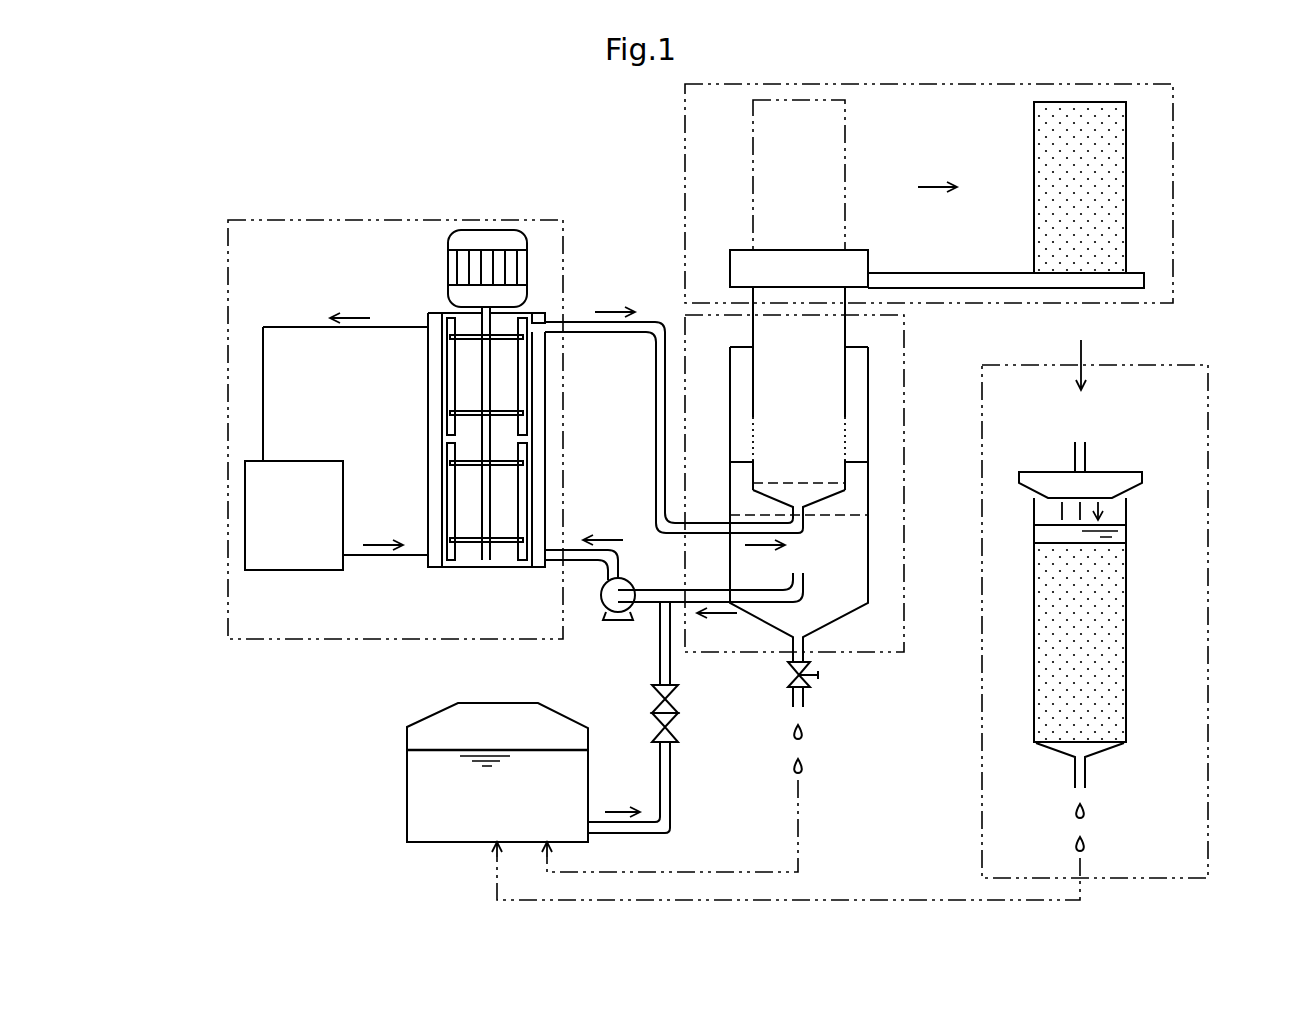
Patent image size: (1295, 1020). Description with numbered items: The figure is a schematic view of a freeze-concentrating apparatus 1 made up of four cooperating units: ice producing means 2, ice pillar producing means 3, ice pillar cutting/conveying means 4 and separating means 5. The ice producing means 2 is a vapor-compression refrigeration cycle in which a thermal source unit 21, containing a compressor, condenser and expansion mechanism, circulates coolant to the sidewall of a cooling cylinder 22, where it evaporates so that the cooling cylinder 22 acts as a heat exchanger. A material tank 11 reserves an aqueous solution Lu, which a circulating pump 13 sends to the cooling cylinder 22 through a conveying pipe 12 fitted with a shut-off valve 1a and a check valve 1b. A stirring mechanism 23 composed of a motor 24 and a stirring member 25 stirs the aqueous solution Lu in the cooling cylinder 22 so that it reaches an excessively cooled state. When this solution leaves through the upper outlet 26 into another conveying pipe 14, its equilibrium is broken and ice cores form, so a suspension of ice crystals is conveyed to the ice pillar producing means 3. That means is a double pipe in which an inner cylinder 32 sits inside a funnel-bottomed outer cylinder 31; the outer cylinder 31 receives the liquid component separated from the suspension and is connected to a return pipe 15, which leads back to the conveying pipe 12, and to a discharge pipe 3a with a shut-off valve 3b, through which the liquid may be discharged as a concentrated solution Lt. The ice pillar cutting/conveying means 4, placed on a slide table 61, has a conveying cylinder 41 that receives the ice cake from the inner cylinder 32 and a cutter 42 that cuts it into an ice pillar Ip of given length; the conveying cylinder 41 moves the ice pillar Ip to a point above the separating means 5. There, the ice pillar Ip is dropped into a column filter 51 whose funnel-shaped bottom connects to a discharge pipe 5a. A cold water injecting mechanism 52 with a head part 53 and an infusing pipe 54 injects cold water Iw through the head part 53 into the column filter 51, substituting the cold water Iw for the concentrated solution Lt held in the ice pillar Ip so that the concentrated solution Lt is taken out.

The freeze-concentrating apparatus 1 is at (228, 88).
The ice producing means 2 is at (228, 248).
The ice pillar producing means 3 is at (904, 652).
The ice pillar cutting/conveying means 4 is at (953, 82).
The separating means 5 is at (1208, 410).
The material tank 11 is at (407, 805).
The conveying pipe 12 is at (667, 808).
The circulating pump 13 is at (603, 608).
The conveying pipe 14 is at (656, 430).
The return pipe 15 is at (740, 604).
The shut-off valve 1a is at (652, 740).
The check valve 1b is at (652, 700).
The discharge pipe 3a is at (793, 704).
The shut-off valve 3b is at (812, 680).
The discharge pipe 5a is at (1073, 772).
The thermal source unit 21 is at (245, 555).
The cooling cylinder 22 is at (545, 418).
The stirring mechanism 23 is at (437, 247).
The motor 24 is at (492, 228).
The stirring member 25 is at (458, 376).
The upper outlet 26 is at (546, 318).
The outer cylinder 31 is at (868, 487).
The inner cylinder 32 is at (845, 370).
The conveying cylinder 41 is at (845, 175).
The cutter 42 is at (858, 250).
The column filter 51 is at (1126, 688).
The cold water injecting mechanism 52 is at (1120, 458).
The head part 53 is at (1125, 480).
The infusing pipe 54 is at (1072, 456).
The slide table 61 is at (985, 272).
The aqueous solution Lu is at (467, 520).
The concentrated solution Lt is at (1087, 812).
The ice pillar Ip is at (1105, 215).
The cold water Iw is at (1040, 535).